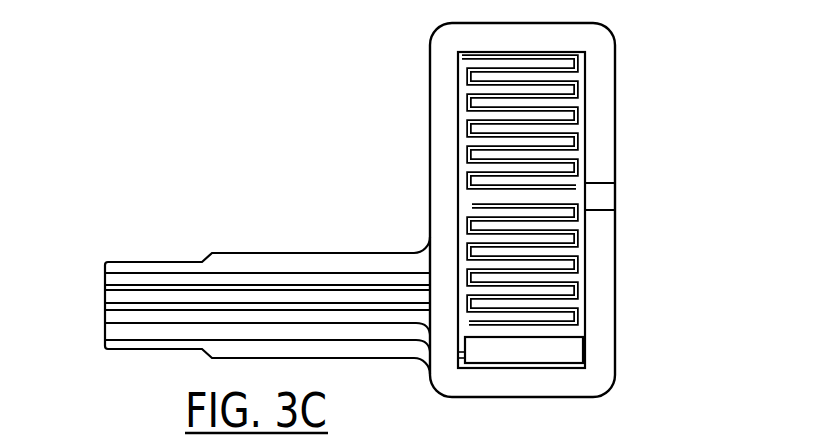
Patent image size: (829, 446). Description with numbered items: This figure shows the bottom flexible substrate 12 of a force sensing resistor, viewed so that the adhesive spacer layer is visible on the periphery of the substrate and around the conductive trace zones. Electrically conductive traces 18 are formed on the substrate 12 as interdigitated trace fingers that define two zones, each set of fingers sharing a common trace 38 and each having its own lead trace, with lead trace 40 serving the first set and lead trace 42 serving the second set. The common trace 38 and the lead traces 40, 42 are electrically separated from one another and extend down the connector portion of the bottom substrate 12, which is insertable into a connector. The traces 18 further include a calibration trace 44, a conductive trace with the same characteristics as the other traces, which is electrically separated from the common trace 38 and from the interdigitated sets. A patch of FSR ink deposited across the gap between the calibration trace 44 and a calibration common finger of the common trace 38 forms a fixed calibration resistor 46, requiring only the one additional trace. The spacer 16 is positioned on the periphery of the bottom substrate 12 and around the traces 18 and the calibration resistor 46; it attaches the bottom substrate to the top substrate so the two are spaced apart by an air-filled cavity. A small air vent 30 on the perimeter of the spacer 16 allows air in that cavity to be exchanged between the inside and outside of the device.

The first substrate 12 is at (258, 253).
The spacer 16 is at (615, 38).
The electrically conductive traces 18 is at (578, 270).
The air vent 30 is at (627, 198).
The common trace 38 is at (117, 335).
The lead trace 40 is at (153, 278).
The lead trace 42 is at (110, 298).
The calibration trace 44 is at (110, 317).
The calibration resistor 46 is at (585, 348).